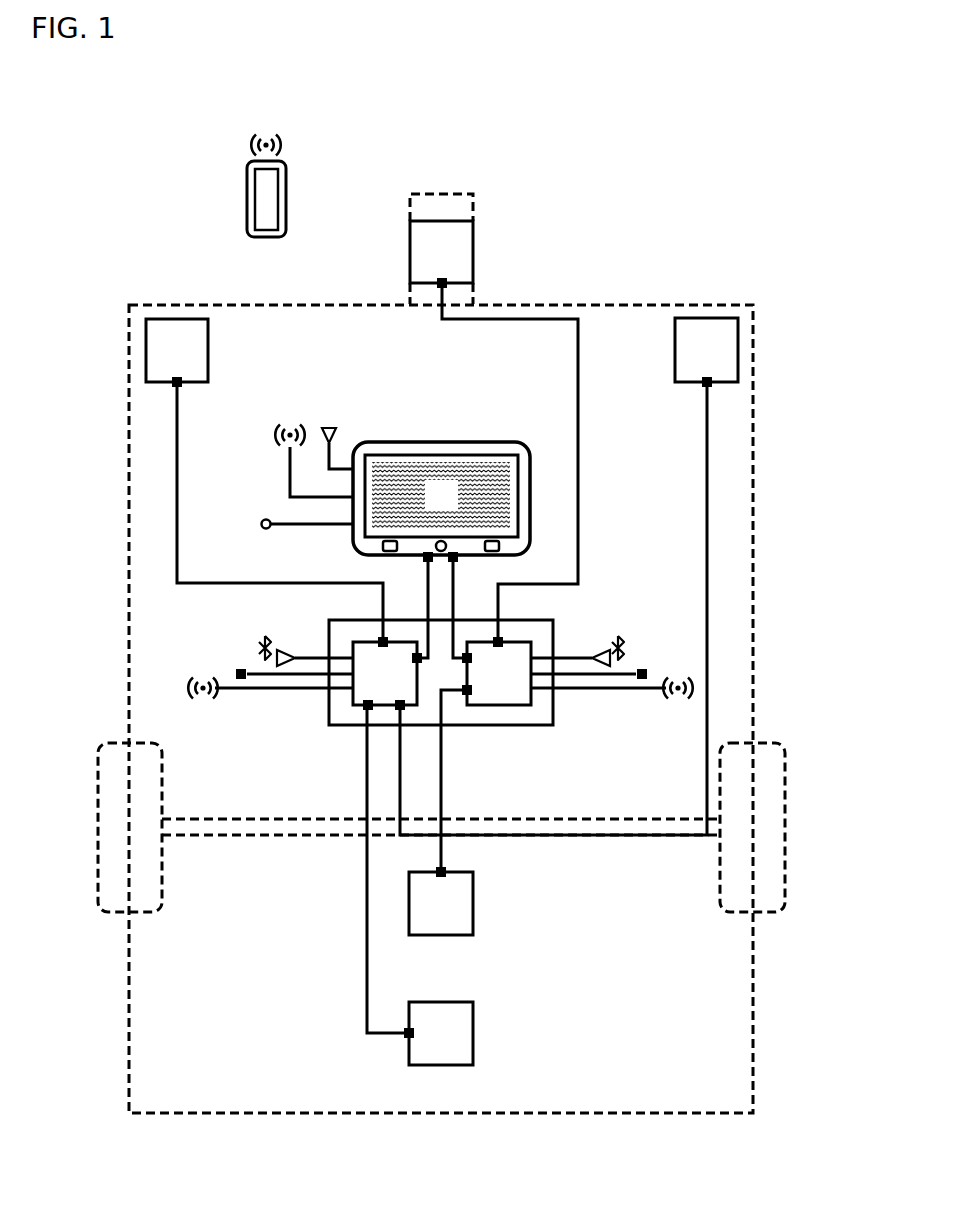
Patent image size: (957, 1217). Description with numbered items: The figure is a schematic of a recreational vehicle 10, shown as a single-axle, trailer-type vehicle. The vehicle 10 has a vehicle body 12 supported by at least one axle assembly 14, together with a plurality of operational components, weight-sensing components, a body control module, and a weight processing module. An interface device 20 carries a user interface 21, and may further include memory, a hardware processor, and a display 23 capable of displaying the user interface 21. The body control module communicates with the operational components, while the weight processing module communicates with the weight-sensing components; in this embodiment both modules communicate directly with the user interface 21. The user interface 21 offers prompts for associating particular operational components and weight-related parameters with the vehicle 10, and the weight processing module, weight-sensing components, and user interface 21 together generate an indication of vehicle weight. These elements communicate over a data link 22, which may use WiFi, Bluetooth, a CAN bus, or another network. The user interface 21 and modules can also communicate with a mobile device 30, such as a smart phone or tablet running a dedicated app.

The recreational vehicle 10 is at (741, 209).
The vehicle body 12 is at (731, 306).
The axle assembly 14 is at (233, 819).
The interface device 20 is at (396, 474).
The user interface 21 is at (455, 508).
The data link 22 is at (291, 527).
The display 23 is at (392, 452).
The mobile device 30 is at (286, 163).